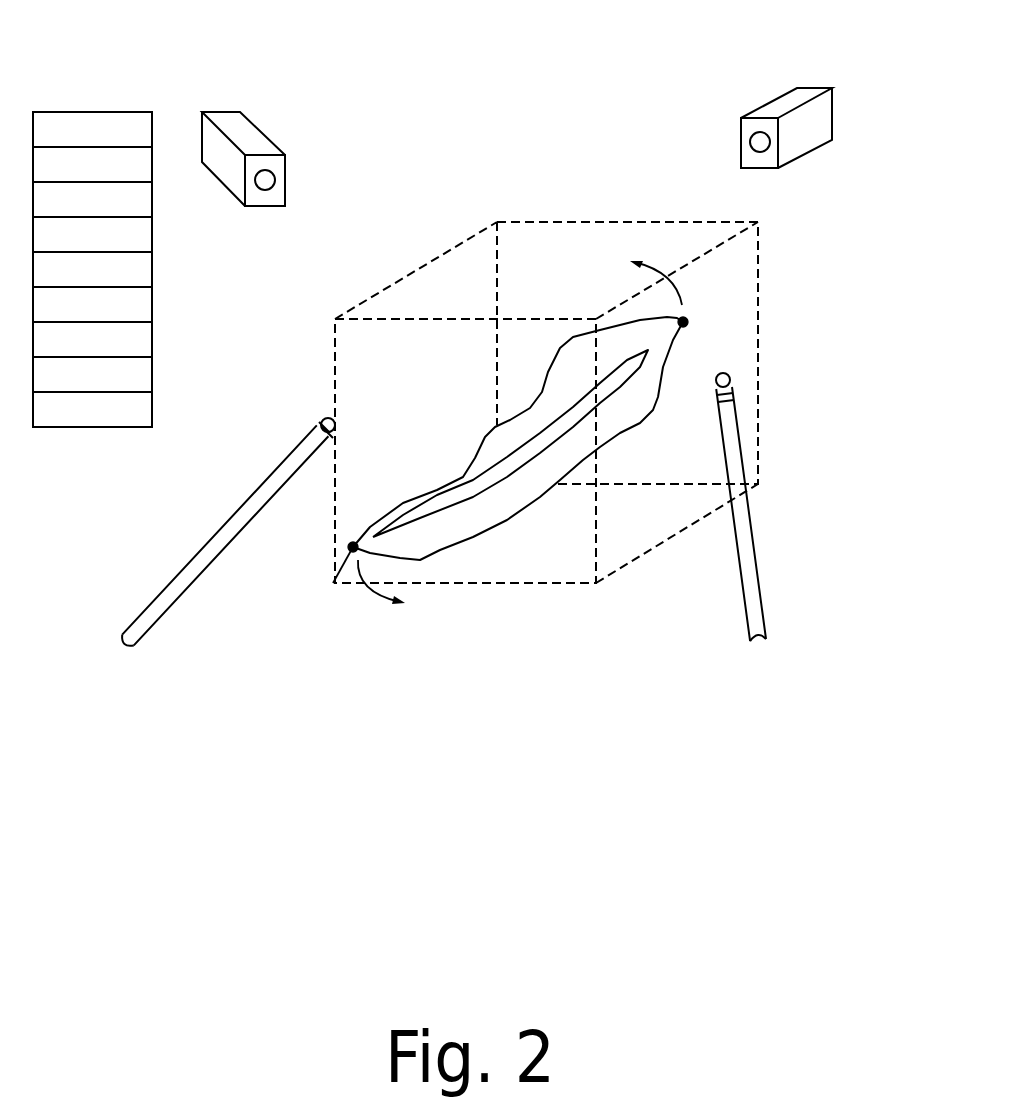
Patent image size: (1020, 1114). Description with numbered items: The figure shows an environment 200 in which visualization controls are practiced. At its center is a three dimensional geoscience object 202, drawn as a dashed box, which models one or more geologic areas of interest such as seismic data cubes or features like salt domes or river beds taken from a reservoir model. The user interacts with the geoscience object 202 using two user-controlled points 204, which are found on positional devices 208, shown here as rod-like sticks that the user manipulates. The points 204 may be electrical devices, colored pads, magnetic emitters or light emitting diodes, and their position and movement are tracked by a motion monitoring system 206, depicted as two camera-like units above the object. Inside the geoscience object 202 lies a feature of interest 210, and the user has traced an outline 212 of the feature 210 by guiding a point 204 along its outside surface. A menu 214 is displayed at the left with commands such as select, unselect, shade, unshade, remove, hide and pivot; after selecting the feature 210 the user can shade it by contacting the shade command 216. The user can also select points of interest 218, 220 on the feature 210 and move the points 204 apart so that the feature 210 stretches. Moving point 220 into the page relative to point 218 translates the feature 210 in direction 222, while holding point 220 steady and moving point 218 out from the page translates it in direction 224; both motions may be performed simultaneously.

The environment 200 is at (310, 46).
The three dimensional geoscience object 202 is at (430, 262).
The user-controlled points 204 is at (326, 418).
The motion monitoring system 206 is at (268, 135).
The positional devices 208 is at (190, 560).
The feature of interest 210 is at (523, 488).
The outline 212 is at (488, 430).
The menu 214 is at (95, 110).
The shade command 216 is at (147, 235).
The point of interest 218 is at (353, 548).
The point of interest 220 is at (685, 322).
The direction 222 is at (659, 267).
The direction 224 is at (374, 595).